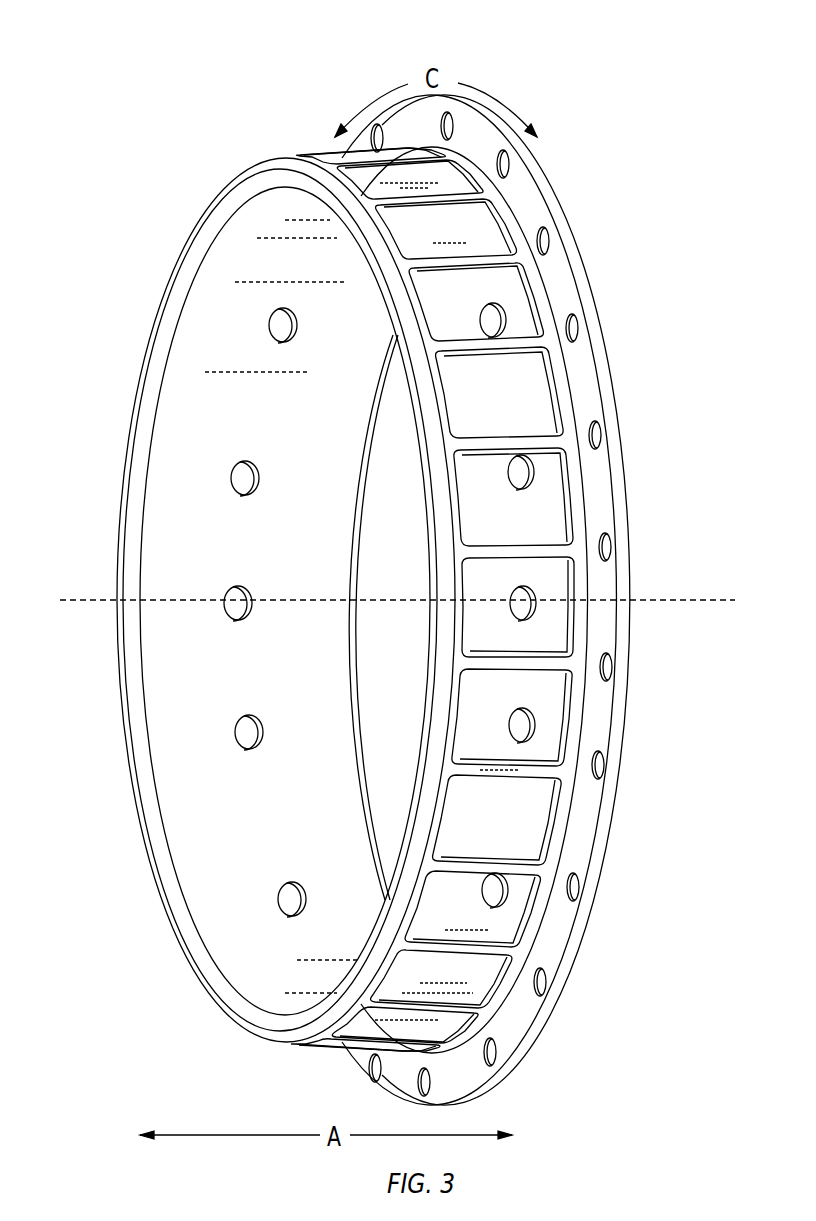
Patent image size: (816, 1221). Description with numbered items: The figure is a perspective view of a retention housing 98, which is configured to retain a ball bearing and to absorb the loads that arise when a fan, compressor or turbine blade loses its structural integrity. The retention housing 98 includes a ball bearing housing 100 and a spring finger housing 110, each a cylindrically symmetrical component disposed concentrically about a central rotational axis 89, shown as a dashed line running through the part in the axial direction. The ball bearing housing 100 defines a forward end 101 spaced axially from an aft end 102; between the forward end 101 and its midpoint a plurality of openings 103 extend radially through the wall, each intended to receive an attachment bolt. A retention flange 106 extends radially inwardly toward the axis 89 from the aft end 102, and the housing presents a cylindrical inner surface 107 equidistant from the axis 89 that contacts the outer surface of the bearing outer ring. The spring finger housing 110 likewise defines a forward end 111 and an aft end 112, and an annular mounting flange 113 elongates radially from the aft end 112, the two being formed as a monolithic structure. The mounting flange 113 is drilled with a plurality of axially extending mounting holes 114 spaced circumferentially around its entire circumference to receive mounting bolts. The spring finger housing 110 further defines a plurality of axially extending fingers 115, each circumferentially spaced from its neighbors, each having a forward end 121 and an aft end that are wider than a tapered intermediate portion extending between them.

The retention housing 98 is at (578, 95).
The ball bearing housing 100 is at (330, 527).
The forward end 101 is at (185, 786).
The aft end 102 is at (362, 658).
The openings 103 is at (229, 620).
The retention flange 106 is at (370, 785).
The cylindrical inner surface 107 is at (318, 824).
The spring finger housing 110 is at (310, 135).
The forward end 111 is at (133, 862).
The aft end 112 is at (555, 357).
The annular mounting flange 113 is at (537, 177).
The mounting holes 114 is at (600, 437).
The fingers 115 is at (507, 550).
The forward end 121 is at (450, 337).
The central rotational axis 89 is at (92, 600).